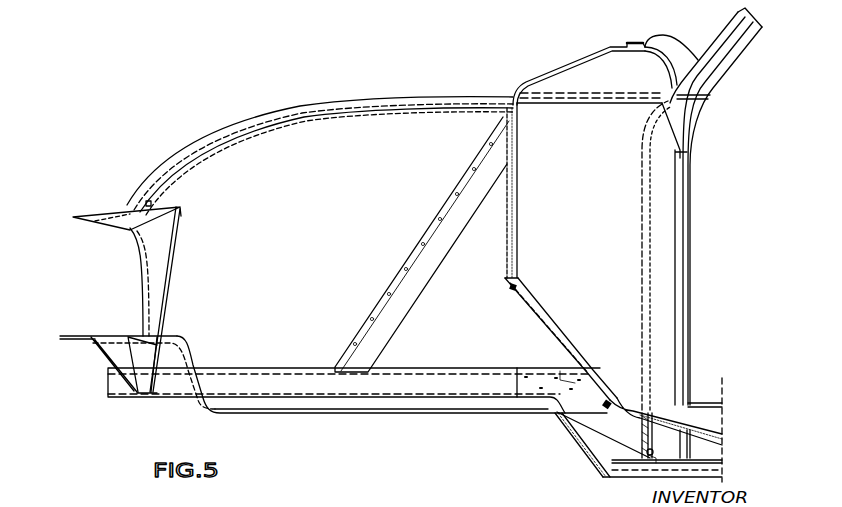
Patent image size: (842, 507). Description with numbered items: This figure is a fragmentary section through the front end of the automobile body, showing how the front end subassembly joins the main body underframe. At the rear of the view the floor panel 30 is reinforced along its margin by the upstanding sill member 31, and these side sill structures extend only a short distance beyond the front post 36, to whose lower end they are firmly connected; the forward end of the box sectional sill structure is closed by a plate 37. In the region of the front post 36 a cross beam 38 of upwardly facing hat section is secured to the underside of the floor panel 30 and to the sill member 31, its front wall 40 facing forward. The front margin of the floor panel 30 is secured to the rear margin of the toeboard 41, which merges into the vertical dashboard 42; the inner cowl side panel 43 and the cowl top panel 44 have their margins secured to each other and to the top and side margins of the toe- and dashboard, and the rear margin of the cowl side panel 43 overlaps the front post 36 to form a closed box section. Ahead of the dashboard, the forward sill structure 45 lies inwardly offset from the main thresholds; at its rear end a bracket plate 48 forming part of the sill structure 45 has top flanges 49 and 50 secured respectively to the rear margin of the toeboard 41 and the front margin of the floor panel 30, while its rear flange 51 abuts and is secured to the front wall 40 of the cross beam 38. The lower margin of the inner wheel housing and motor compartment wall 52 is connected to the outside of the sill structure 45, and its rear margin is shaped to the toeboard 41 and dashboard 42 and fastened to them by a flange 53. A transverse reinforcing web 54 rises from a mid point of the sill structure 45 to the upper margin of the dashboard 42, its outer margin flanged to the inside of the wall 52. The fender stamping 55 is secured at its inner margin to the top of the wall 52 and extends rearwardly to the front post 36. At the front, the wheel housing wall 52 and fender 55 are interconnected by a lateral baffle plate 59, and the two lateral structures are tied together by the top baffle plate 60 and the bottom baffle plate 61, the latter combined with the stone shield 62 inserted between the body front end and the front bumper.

The floor panel 30 is at (716, 431).
The sill member 31 is at (604, 455).
The front post 36 is at (683, 344).
The plate 37 is at (586, 430).
The cross beam 38 is at (691, 447).
The front wall 40 is at (652, 460).
The toeboard 41 is at (549, 331).
The dashboard 42 is at (519, 213).
The inner cowl side panel 43 is at (571, 256).
The cowl top panel 44 is at (567, 64).
The forward sill structure 45 is at (170, 406).
The bracket plate 48 is at (590, 421).
The top flange 49 is at (575, 384).
The top flange 50 is at (631, 412).
The rear flange 51 is at (641, 438).
The inner wheel housing and motor compartment wall 52 is at (251, 326).
The flange 53 is at (514, 292).
The transverse reinforcing web 54 is at (424, 241).
The fender stamping 55 is at (399, 103).
The baffle plate 59 is at (162, 235).
The top baffle plate 60 is at (121, 210).
The bottom baffle plate 61 is at (100, 350).
The stone shield 62 is at (78, 336).